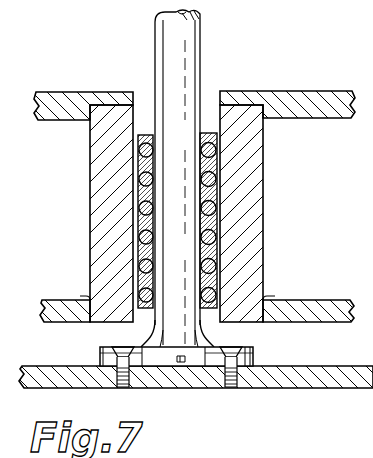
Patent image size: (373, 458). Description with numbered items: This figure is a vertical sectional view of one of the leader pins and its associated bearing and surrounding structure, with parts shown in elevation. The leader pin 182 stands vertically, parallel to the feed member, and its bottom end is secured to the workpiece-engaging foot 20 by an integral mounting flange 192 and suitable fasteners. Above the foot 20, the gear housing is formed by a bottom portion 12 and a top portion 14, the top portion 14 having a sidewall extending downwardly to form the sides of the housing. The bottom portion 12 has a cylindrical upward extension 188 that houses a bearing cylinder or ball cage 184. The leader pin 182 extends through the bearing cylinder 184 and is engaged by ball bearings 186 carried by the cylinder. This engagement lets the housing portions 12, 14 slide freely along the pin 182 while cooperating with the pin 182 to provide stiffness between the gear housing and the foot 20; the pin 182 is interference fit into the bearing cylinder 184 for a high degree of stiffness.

The bottom portion 12 is at (324, 300).
The top portion 14 is at (296, 91).
The workpiece-engaging foot 20 is at (292, 378).
The leader pin 182 is at (170, 33).
The bearing cylinder 184 is at (207, 132).
The ball bearings 186 is at (213, 205).
The cylindrical upward extension 188 is at (136, 172).
The mounting flange 192 is at (256, 357).